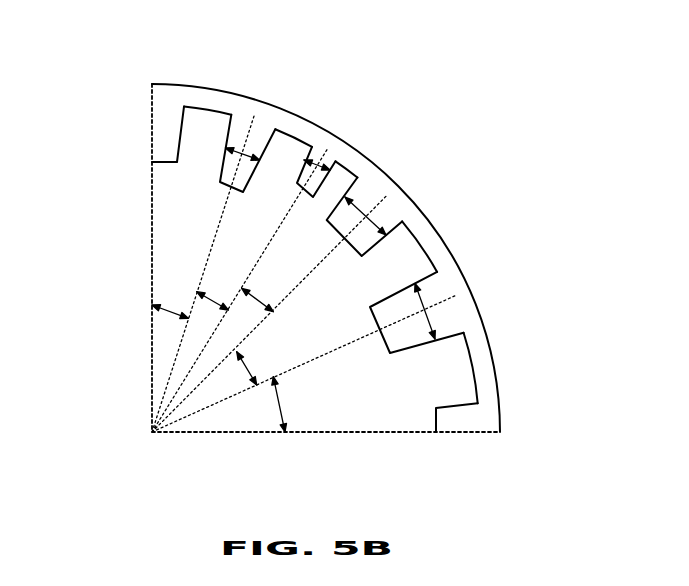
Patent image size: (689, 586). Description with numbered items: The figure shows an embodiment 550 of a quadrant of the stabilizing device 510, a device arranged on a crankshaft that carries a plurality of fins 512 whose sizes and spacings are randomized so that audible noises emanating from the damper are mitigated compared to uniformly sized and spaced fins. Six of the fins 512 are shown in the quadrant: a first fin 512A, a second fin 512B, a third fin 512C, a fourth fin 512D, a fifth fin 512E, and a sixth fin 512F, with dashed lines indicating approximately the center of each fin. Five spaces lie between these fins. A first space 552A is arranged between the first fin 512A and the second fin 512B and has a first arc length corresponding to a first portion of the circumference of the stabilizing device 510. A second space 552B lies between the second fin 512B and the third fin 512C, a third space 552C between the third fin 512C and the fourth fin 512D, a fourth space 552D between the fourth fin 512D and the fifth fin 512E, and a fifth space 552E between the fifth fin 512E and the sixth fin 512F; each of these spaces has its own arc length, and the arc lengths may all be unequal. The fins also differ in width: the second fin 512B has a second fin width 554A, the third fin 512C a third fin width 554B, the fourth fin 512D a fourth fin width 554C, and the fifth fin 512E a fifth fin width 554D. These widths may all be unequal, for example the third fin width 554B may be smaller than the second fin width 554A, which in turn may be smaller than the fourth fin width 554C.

The embodiment 550 is at (455, 36).
The stabilizing device 510 is at (407, 195).
The plurality of fins 512 is at (173, 182).
The first fin 512A is at (165, 125).
The second fin 512B is at (217, 167).
The third fin 512C is at (292, 185).
The fourth fin 512D is at (330, 223).
The fifth fin 512E is at (383, 299).
The sixth fin 512F is at (435, 425).
The first space 552A is at (166, 308).
The second space 552B is at (215, 302).
The third space 552C is at (258, 300).
The fourth space 552D is at (244, 368).
The fifth space 552E is at (288, 414).
The second fin width 554A is at (240, 150).
The third fin width 554B is at (322, 162).
The fourth fin width 554C is at (400, 222).
The fifth fin width 554D is at (428, 318).